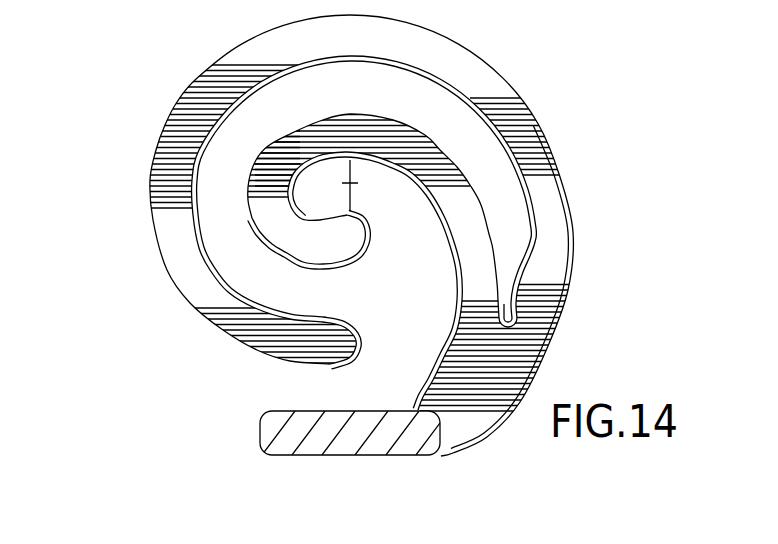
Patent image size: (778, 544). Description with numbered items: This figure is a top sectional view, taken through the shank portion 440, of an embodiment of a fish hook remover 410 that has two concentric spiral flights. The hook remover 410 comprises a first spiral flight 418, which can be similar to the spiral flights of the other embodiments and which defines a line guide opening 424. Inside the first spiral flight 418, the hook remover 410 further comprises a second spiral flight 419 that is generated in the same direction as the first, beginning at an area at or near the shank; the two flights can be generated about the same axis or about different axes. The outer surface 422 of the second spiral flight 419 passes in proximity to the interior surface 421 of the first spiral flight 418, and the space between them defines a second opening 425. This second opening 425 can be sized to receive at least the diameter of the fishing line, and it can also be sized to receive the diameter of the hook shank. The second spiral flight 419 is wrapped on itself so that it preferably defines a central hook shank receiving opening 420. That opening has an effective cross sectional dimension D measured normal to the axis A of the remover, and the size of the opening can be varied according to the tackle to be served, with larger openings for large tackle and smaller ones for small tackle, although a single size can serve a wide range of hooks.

The fish hook remover 410 is at (361, 266).
The first spiral flight 418 is at (582, 261).
The second spiral flight 419 is at (350, 106).
The hook shank receiving opening 420 is at (367, 207).
The interior surface 421 is at (283, 314).
The outer surface 422 is at (305, 266).
The line guide opening 424 is at (287, 390).
The second opening 425 is at (322, 296).
The shank portion 440 is at (330, 458).
The axis A is at (358, 184).
The effective cross sectional dimension D is at (350, 182).